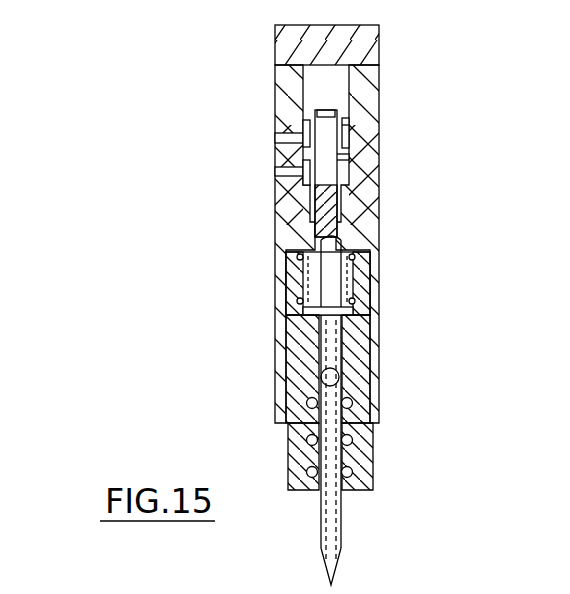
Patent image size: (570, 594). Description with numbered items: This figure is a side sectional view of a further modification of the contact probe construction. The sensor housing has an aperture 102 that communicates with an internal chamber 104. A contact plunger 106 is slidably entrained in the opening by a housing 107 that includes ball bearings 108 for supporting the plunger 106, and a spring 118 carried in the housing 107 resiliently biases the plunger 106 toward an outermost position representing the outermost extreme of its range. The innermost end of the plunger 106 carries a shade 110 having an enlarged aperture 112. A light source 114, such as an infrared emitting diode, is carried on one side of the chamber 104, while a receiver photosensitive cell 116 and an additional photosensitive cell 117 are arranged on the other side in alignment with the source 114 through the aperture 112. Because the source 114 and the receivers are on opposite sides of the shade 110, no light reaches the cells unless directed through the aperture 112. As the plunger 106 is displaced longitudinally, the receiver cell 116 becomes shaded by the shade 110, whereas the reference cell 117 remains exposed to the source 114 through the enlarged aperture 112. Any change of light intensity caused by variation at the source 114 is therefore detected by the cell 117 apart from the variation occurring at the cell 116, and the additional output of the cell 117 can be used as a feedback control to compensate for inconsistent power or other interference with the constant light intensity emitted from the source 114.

The aperture 102 is at (292, 405).
The internal chamber 104 is at (337, 82).
The contact plunger 106 is at (340, 531).
The housing 107 is at (375, 472).
The ball bearings 108 is at (301, 463).
The shade 110 is at (336, 157).
The aperture 112 is at (326, 173).
The light source 114 is at (350, 132).
The photosensitive cell 116 is at (278, 213).
The photosensitive cell 117 is at (275, 146).
The spring 118 is at (357, 282).